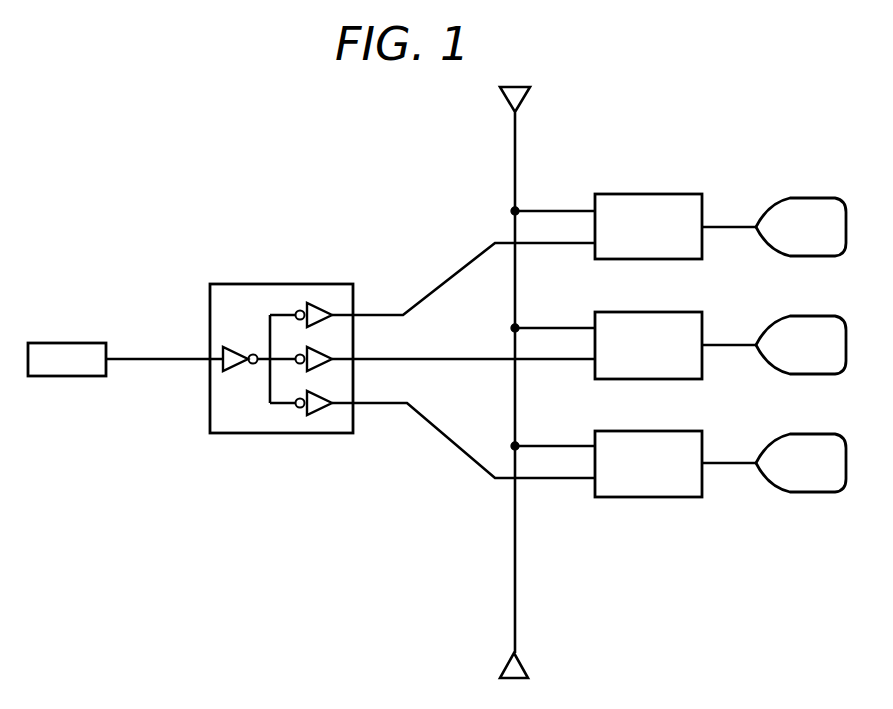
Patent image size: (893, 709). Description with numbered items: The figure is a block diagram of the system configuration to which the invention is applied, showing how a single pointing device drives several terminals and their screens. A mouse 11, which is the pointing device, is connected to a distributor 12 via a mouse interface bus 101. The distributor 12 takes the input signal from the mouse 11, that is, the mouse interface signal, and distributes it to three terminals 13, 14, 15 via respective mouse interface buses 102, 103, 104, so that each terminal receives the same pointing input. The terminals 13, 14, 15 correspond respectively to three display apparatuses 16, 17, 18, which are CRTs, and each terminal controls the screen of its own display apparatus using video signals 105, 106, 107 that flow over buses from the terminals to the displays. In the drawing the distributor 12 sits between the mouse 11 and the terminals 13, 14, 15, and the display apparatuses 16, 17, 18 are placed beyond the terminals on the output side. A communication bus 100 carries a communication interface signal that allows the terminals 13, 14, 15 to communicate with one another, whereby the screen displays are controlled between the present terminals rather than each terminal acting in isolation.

The communication bus 100 is at (515, 148).
The mouse 11 is at (103, 343).
The mouse interface bus 101 is at (150, 358).
The distributor 12 is at (320, 283).
The mouse interface bus 102 is at (447, 280).
The mouse interface bus 103 is at (438, 358).
The mouse interface bus 104 is at (450, 440).
The terminal 13 is at (663, 193).
The terminal 14 is at (663, 311).
The terminal 15 is at (663, 430).
The video signal 105 is at (738, 226).
The video signal 106 is at (738, 344).
The video signal 107 is at (738, 462).
The display apparatus 16 is at (805, 197).
The display apparatus 17 is at (805, 315).
The display apparatus 18 is at (805, 433).